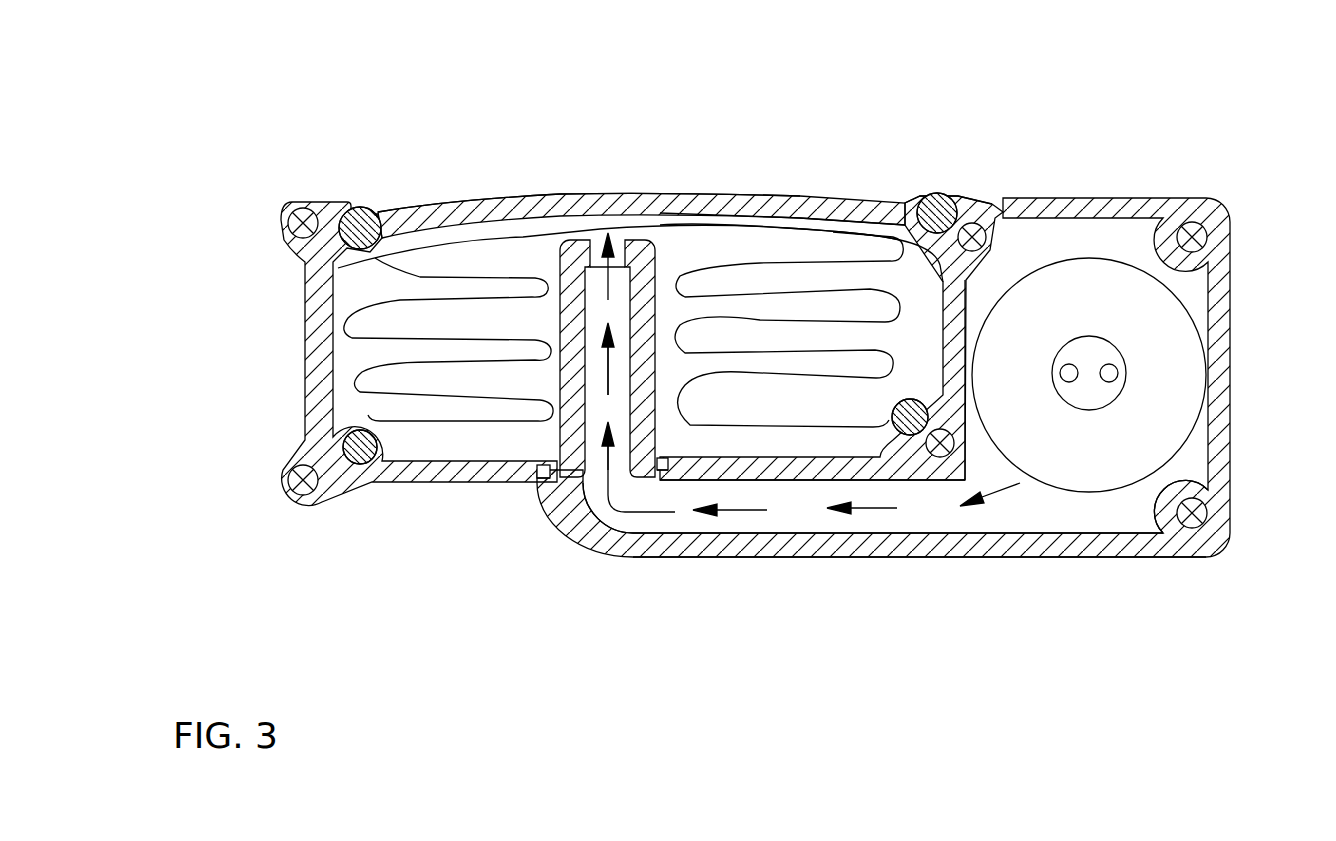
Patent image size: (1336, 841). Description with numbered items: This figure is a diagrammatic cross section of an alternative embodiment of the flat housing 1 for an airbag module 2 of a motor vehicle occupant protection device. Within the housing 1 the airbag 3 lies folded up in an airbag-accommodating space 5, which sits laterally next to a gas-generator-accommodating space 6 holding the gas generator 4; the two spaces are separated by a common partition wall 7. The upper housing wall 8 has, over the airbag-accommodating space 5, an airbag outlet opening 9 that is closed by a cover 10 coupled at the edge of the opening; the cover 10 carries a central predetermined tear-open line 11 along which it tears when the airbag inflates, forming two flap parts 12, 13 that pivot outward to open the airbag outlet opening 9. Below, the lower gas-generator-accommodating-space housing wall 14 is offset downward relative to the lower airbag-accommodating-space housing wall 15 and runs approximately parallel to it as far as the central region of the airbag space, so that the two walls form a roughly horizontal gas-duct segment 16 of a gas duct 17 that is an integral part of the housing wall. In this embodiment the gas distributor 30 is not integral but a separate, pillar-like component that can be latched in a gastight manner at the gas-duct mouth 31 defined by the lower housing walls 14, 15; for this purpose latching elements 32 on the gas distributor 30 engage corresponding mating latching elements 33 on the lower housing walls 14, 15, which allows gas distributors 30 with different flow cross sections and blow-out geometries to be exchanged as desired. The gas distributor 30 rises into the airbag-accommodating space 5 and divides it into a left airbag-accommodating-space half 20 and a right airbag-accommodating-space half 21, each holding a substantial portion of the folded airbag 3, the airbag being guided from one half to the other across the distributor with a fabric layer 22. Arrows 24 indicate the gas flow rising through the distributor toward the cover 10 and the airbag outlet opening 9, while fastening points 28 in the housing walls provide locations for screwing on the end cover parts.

The housing 1 is at (1192, 179).
The airbag module 2 is at (1010, 258).
The airbag 3 is at (787, 228).
The gas generator 4 is at (1160, 365).
The airbag-accommodating space 5 is at (423, 456).
The gas-generator-accommodating space 6 is at (1156, 510).
The partition wall 7 is at (948, 329).
The upper housing wall 8 is at (986, 177).
The airbag outlet opening 9 is at (611, 222).
The cover 10 is at (908, 178).
The predetermined tear-open line 11 is at (626, 200).
The flap part 12 is at (467, 204).
The flap part 13 is at (850, 203).
The lower gas-generator-accommodating-space housing wall 14 is at (1017, 545).
The lower airbag-accommodating-space housing wall 15 is at (815, 472).
The gas-duct segment 16 is at (754, 545).
The gas duct 17 is at (615, 547).
The left airbag-accommodating-space half 20 is at (396, 281).
The right airbag-accommodating-space half 21 is at (852, 295).
The fabric layer 22 is at (523, 237).
The arrows 24 is at (608, 365).
The fastening points 28 is at (303, 223).
The gas distributor 30 is at (573, 308).
The gas-duct mouth 31 is at (629, 397).
The latching elements 32 is at (550, 472).
The mating latching elements 33 is at (542, 482).